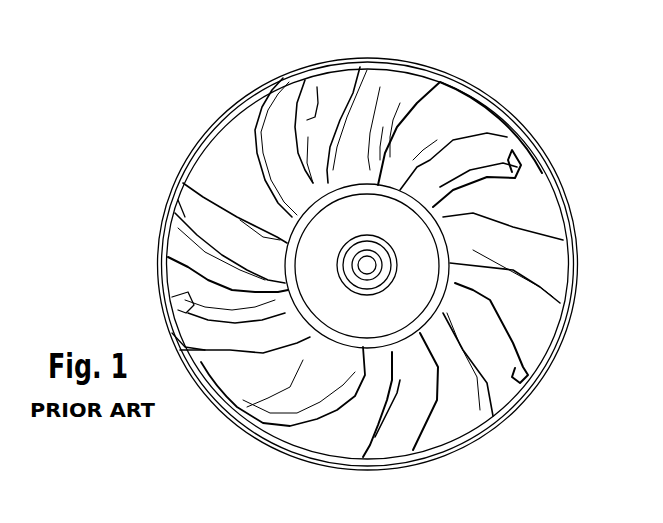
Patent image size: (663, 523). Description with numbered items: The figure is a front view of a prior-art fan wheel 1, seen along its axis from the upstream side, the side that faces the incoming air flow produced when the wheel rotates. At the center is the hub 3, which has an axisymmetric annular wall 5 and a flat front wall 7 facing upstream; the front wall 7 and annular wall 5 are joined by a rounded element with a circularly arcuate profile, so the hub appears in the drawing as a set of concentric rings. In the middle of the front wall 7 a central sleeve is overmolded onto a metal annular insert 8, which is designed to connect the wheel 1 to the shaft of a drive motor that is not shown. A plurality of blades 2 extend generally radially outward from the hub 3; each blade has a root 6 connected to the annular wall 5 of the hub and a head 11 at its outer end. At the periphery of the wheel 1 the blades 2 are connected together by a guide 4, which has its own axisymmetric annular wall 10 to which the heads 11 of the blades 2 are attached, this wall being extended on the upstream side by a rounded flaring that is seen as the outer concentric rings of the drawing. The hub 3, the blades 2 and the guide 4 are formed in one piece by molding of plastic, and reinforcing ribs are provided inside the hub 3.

The wheel 1 is at (218, 82).
The blades 2 is at (305, 80).
The central hub 3 is at (388, 465).
The guide 4 is at (257, 415).
The annular wall 5 is at (310, 337).
The roots 6 is at (360, 67).
The front wall 7 is at (400, 318).
The metal annular insert 8 is at (368, 242).
The annular wall 10 is at (482, 103).
The heads 11 is at (517, 170).